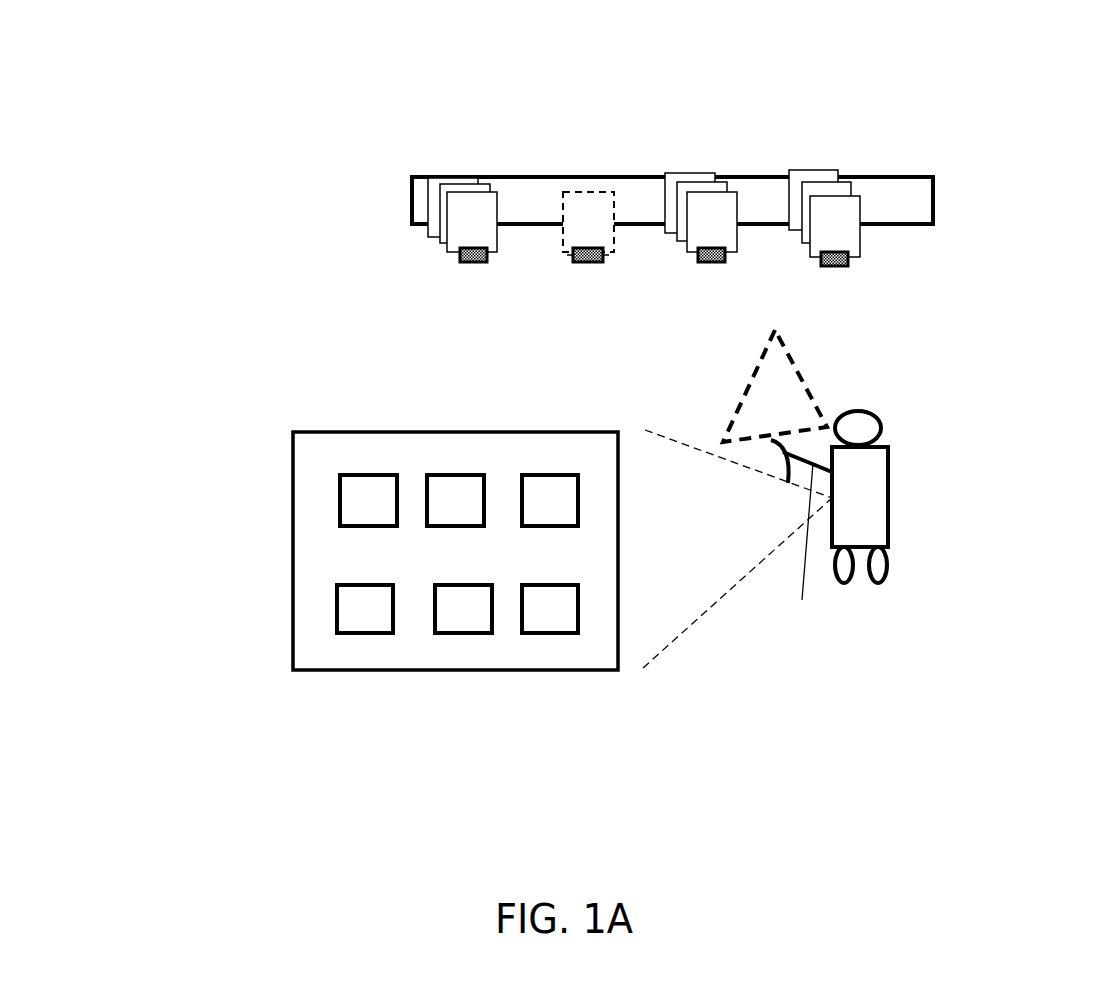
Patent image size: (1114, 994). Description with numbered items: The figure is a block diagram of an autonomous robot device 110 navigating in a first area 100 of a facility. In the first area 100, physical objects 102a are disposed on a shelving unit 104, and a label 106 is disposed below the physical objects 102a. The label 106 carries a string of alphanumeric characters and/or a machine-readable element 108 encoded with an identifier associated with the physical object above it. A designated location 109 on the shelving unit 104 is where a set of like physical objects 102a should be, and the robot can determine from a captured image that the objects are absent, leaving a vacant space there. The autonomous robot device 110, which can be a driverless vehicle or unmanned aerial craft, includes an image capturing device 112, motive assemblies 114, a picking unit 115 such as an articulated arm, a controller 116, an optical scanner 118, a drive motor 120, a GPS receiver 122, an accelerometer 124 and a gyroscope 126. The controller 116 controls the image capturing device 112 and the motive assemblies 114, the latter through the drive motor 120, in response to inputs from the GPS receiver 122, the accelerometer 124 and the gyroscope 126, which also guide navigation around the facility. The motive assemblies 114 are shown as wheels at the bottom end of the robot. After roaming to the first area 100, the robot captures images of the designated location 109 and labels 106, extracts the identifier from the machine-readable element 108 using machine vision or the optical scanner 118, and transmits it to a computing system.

The first area 100 is at (215, 58).
The shelving unit 104 is at (547, 178).
The physical objects 102a is at (404, 252).
The label 106 is at (416, 259).
The machine-readable element 108 is at (462, 257).
The designated location 109 is at (563, 226).
The autonomous robot device 110 is at (915, 492).
The image capturing device 112 is at (882, 428).
The motive assemblies 114 is at (888, 565).
The picking unit 115 is at (807, 552).
The controller 116 is at (557, 633).
The optical scanner 118 is at (550, 475).
The drive motor 120 is at (455, 475).
The GPS receiver 122 is at (340, 500).
The accelerometer 124 is at (337, 610).
The gyroscope 126 is at (463, 633).